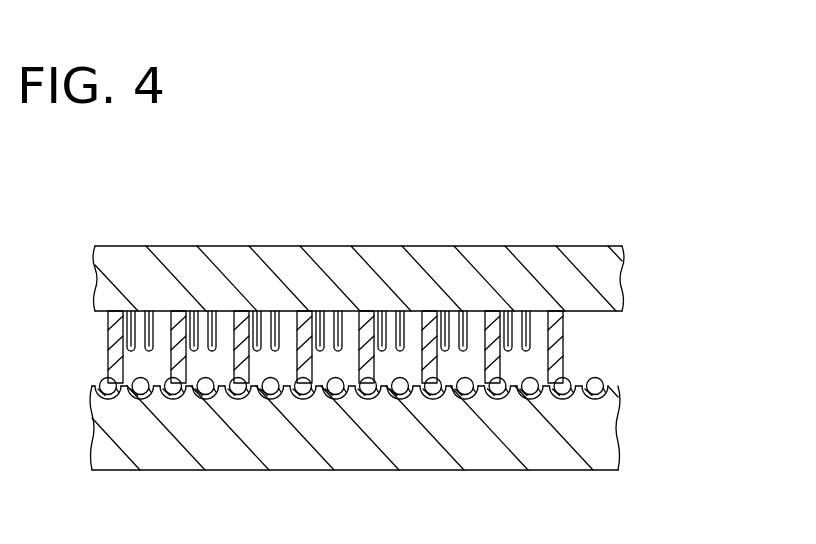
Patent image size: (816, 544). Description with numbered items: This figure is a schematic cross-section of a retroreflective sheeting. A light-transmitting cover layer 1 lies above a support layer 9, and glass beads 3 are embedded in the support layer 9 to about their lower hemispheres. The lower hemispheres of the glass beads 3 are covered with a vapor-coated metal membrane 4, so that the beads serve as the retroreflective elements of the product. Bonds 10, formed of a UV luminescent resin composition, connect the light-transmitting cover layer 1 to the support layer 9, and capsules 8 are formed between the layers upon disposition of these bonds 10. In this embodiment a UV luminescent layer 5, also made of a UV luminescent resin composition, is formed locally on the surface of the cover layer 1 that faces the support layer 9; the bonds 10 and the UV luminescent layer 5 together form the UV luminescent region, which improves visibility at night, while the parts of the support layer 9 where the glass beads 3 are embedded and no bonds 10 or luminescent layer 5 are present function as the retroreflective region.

The light-transmitting cover layer 1 is at (560, 273).
The support layer 9 is at (543, 442).
The glass beads 3 is at (102, 382).
The vapor-coated metal membrane 4 is at (133, 398).
The bonds 10 is at (562, 350).
The capsules 8 is at (224, 322).
The UV luminescent layer 5 is at (280, 320).